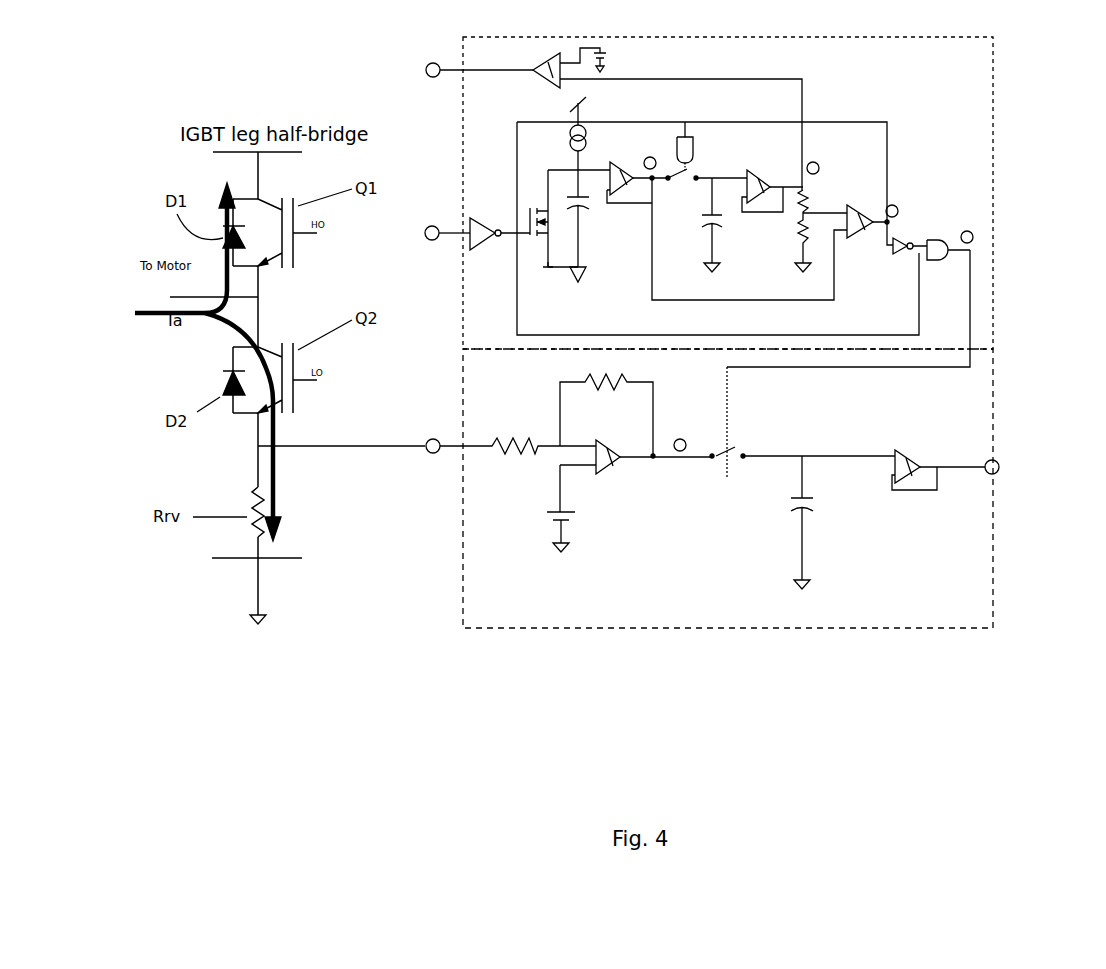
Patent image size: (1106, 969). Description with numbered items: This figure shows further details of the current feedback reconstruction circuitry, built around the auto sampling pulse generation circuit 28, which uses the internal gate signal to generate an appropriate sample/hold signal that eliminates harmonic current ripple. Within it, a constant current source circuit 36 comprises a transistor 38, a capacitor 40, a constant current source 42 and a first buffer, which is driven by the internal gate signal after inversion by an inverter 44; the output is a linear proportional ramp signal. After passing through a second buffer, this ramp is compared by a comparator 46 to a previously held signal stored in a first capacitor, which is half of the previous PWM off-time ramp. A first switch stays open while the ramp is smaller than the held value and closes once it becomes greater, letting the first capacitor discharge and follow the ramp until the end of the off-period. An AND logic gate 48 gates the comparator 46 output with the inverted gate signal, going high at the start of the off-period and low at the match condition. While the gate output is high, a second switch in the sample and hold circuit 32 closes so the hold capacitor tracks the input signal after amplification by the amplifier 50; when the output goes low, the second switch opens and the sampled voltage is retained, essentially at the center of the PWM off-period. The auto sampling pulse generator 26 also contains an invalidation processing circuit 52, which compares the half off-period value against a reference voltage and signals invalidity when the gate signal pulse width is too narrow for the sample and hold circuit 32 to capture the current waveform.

The auto sampling pulse generator 26 is at (995, 192).
The auto sampling pulse generation circuit 28 is at (995, 418).
The sample and hold circuit 32 is at (830, 526).
The constant current source circuit 36 is at (546, 278).
The transistor 38 is at (528, 209).
The capacitor 40 is at (587, 215).
The constant current source 42 is at (590, 142).
The inverter 44 is at (482, 251).
The comparator 46 is at (857, 240).
The AND logic gate 48 is at (935, 262).
The amplifier 50 is at (621, 460).
The invalidation processing circuit 52 is at (552, 48).